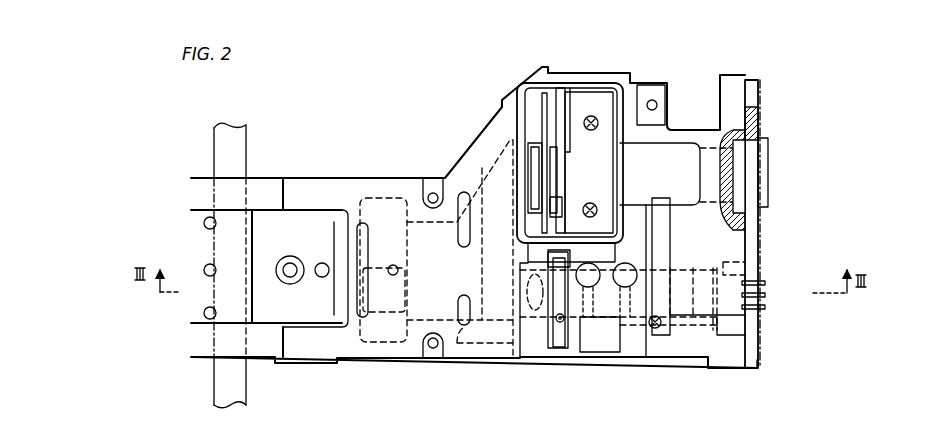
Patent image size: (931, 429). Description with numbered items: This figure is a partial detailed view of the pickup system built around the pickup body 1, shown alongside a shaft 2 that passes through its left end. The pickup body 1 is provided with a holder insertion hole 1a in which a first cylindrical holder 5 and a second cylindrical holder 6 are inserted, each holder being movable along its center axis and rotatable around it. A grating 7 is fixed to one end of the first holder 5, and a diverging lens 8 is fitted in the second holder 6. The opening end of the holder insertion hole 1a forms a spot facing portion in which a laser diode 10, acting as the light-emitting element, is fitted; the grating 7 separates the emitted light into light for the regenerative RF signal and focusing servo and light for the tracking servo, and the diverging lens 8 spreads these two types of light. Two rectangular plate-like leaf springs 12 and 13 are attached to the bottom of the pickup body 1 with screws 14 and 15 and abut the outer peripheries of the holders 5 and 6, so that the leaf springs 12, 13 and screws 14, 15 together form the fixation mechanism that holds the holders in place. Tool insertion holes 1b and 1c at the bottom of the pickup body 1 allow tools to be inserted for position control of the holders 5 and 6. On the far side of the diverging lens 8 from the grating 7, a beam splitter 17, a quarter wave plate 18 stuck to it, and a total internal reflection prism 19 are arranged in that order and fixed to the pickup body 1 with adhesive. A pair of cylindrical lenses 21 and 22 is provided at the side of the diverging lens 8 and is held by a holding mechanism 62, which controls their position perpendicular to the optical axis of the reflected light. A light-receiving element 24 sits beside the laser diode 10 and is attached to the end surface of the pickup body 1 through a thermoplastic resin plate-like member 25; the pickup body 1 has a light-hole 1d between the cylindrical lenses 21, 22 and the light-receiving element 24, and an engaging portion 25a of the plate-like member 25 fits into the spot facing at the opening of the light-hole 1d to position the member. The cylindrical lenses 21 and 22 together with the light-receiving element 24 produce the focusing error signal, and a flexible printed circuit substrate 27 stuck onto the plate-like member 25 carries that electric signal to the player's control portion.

The pickup body 1 is at (337, 175).
The holder insertion hole 1a is at (708, 328).
The tool insertion hole 1b is at (627, 263).
The tool insertion hole 1c is at (597, 260).
The light-hole 1d is at (727, 175).
The guide shaft 2 is at (240, 366).
The first cylindrical holder 5 is at (637, 313).
The second cylindrical holder 6 is at (540, 313).
The grating 7 is at (610, 323).
The diverging lens 8 is at (507, 330).
The laser diode 10 is at (760, 273).
The leaf spring 12 is at (657, 250).
The leaf spring 13 is at (560, 323).
The screw 14 is at (655, 337).
The screw 15 is at (548, 336).
The beam splitter 17 is at (500, 163).
The quarter wave plate 18 is at (473, 323).
The total internal reflection prism 19 is at (392, 313).
The cylindrical lens 21 is at (555, 140).
The cylindrical lens 22 is at (535, 143).
The light-receiving element 24 is at (765, 190).
The resin plate-like member 25 is at (752, 92).
The engaging portion 25a is at (738, 187).
The flexible printed circuit substrate 27 is at (760, 358).
The holding mechanism 62 is at (600, 84).